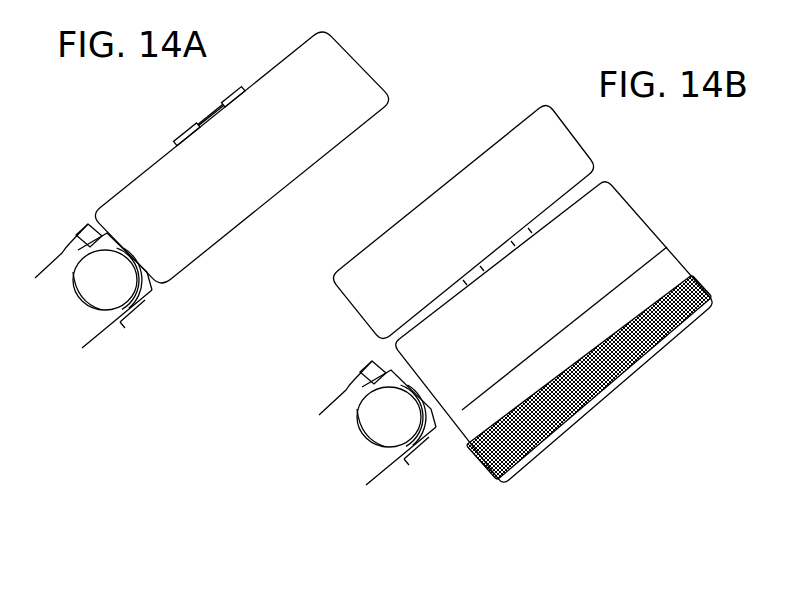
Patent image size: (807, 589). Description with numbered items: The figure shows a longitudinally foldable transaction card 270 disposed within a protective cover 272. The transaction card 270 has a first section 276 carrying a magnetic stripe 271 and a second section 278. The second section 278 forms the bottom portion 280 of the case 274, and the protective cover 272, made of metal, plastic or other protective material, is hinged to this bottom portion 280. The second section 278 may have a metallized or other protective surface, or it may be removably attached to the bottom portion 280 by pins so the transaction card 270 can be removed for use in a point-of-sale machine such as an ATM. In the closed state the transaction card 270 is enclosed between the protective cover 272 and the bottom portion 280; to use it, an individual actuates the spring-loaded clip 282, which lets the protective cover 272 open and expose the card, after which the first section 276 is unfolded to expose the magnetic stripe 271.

In FIG. 14B, the transaction card 270 is at (467, 428).
In FIG. 14B, the magnetic stripe 271 is at (532, 450).
In FIG. 14B, the protective cover 272 is at (582, 146).
In FIG. 14A, the case 274 is at (180, 247).
In FIG. 14B, the first section 276 is at (667, 270).
In FIG. 14B, the second section 278 is at (375, 478).
In FIG. 14B, the bottom portion 280 is at (632, 220).
In FIG. 14A, the spring-loaded clip 282 is at (85, 232).